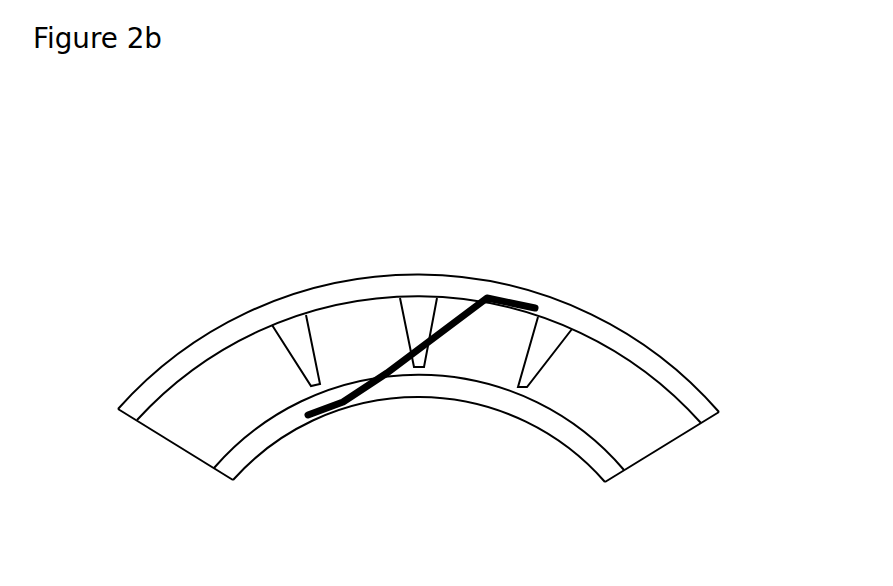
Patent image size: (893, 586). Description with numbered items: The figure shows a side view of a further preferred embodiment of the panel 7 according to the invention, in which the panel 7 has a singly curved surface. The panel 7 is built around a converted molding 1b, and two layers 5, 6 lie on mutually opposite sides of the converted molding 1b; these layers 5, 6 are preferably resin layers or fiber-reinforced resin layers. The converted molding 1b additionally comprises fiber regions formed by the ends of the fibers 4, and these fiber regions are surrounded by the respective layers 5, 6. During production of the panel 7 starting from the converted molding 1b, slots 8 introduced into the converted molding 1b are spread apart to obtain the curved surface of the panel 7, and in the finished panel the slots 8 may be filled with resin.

The converted molding 1b is at (647, 437).
The fibers 4 is at (443, 333).
The layer 5 is at (602, 458).
The layer 6 is at (692, 398).
The panel 7 is at (521, 235).
The slot 8 is at (548, 337).